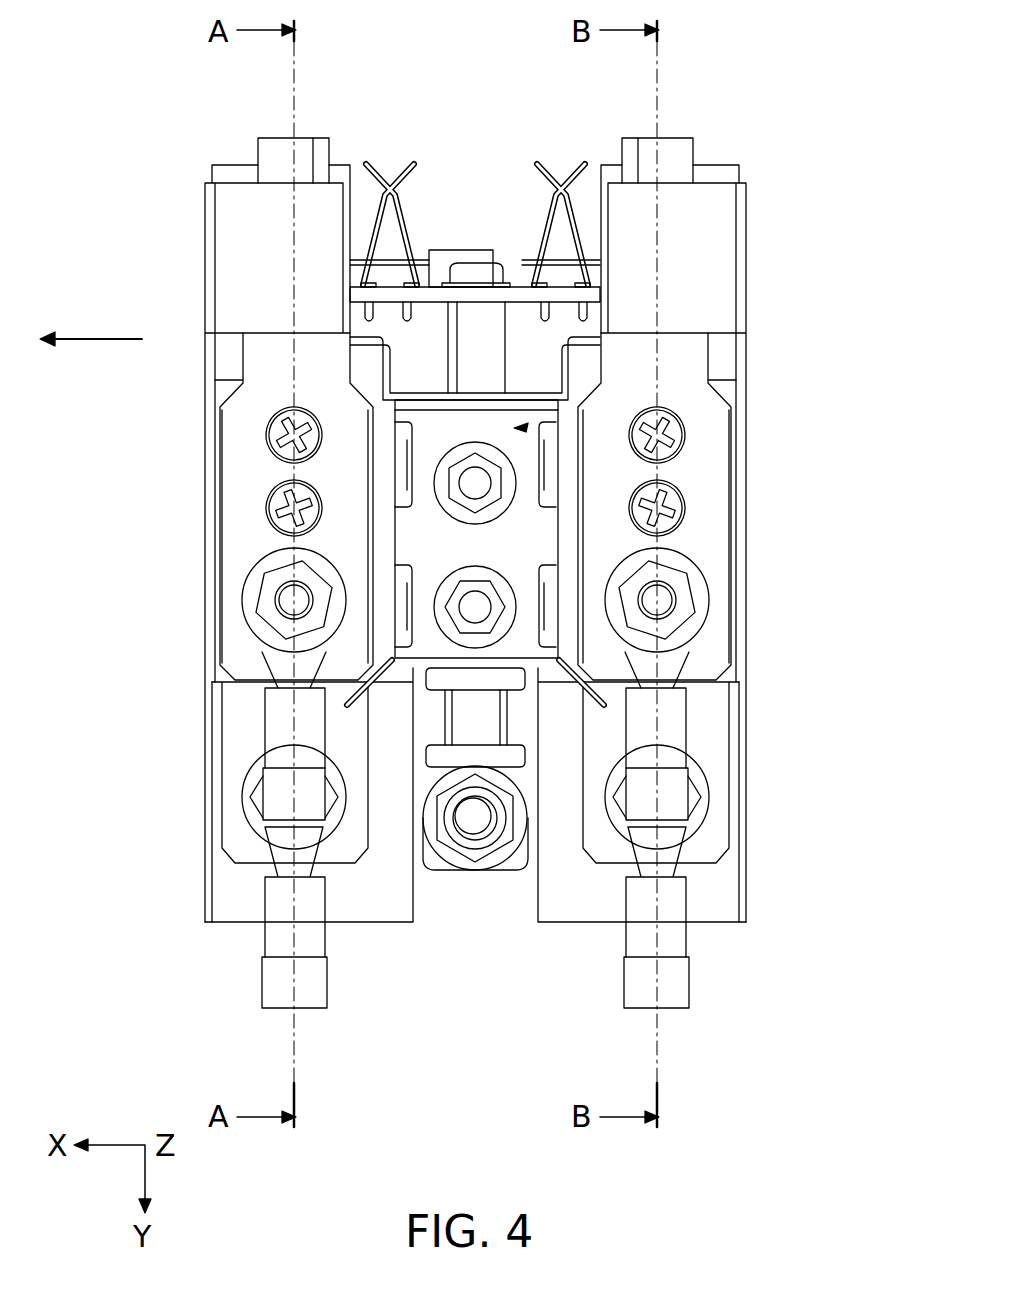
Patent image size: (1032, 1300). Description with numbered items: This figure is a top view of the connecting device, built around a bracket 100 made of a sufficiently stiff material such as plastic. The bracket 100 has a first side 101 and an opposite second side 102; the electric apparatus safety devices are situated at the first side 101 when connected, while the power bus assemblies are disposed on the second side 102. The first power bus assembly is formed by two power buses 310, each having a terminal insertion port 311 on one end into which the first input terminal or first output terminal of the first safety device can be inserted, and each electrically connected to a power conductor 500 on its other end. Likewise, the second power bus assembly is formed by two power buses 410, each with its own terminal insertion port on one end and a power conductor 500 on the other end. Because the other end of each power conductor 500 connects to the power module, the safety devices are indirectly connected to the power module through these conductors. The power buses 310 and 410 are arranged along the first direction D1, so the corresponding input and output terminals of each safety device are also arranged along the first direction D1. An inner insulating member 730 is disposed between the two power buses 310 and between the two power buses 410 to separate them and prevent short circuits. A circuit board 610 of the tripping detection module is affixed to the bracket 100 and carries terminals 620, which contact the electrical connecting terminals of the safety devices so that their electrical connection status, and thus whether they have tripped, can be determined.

The bracket 100 is at (542, 402).
The first side 101 is at (475, 188).
The second side 102 is at (526, 429).
The power bus 310 is at (250, 535).
The terminal insertion port 311 is at (262, 138).
The power bus 410 is at (245, 840).
The power conductor 500 is at (280, 794).
The circuit board 610 is at (583, 300).
The terminal 620 is at (402, 165).
The inner insulating member 730 is at (392, 602).
The first direction D1 is at (92, 339).